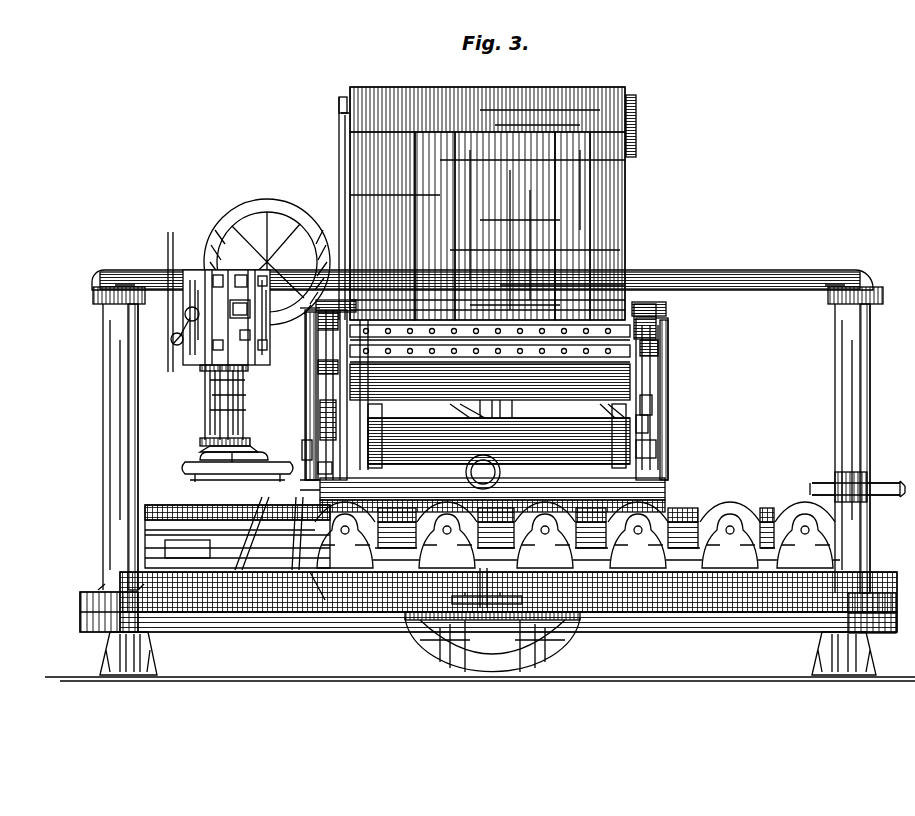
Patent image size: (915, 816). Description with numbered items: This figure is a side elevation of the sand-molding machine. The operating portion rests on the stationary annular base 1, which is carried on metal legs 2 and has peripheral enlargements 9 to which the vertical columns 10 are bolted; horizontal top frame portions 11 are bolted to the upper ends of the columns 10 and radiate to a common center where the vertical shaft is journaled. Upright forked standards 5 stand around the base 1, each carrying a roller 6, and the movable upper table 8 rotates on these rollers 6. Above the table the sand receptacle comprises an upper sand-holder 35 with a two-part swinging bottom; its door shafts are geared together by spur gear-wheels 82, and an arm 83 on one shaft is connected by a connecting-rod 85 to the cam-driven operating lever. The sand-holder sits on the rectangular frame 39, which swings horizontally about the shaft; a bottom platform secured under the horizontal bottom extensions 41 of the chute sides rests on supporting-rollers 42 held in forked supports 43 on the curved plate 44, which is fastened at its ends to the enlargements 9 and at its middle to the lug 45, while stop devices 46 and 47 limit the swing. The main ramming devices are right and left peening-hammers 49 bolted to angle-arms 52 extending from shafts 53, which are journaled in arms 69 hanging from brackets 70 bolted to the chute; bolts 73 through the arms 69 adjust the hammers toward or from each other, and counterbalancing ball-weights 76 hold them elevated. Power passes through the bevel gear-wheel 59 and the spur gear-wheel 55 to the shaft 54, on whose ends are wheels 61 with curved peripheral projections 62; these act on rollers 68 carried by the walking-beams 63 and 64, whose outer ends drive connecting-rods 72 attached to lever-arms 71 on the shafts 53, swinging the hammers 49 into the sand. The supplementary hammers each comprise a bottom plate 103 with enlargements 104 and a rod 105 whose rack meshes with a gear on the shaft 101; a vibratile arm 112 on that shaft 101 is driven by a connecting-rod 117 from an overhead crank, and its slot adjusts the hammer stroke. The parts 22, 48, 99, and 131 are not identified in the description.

The stationary base 1 is at (686, 608).
The metal legs 2 is at (150, 650).
The upright bifurcated standards 5 is at (455, 628).
The roller 6 is at (460, 556).
The movable upper table 8 is at (185, 523).
The peripheral enlargements 9 is at (80, 615).
The vertical columns 10 is at (120, 360).
The horizontal top frame portions 11 is at (300, 288).
The hand wheel 22 is at (285, 234).
The upper sand-holder 35 is at (487, 203).
The rectangular frame 39 is at (632, 346).
The horizontal bottom extensions 41 is at (668, 481).
The supporting-rollers 42 is at (575, 516).
The forked supports 43 is at (492, 538).
The curved plate 44 is at (470, 548).
The peripheral lug 45 is at (485, 610).
The stop device 46 is at (300, 470).
The stop device 47 is at (858, 482).
The hand knob 48 is at (318, 470).
The peening-hammers 49 is at (548, 440).
The angle-arms 52 is at (382, 430).
The shafts 53 is at (652, 428).
The shaft 54 is at (242, 385).
The spur gear-wheel 55 is at (246, 412).
The bevel gear-wheel 59 is at (490, 391).
The wheels 61 is at (316, 360).
The curved peripheral projections 62 is at (660, 448).
The walking-beam 63 is at (345, 300).
The walking-beam 64 is at (645, 305).
The roller 68 is at (356, 308).
The arms 69 is at (312, 448).
The brackets 70 is at (348, 392).
The lever-arm 71 is at (243, 600).
The connecting-rods 72 is at (402, 322).
The bolts 73 is at (295, 600).
The counterbalancing ball-weights 76 is at (483, 472).
The spur gear-wheels 82 is at (637, 130).
The arm 83 is at (339, 110).
The connecting-rod 85 is at (340, 164).
The head block 99 is at (200, 270).
The shaft 101 is at (176, 346).
The bottom plate 103 is at (200, 462).
The enlargements 104 is at (205, 460).
The rod 105 is at (245, 392).
The vibratile arm 112 is at (182, 330).
The connecting-rod 117 is at (168, 246).
The frame plate 131 is at (187, 549).